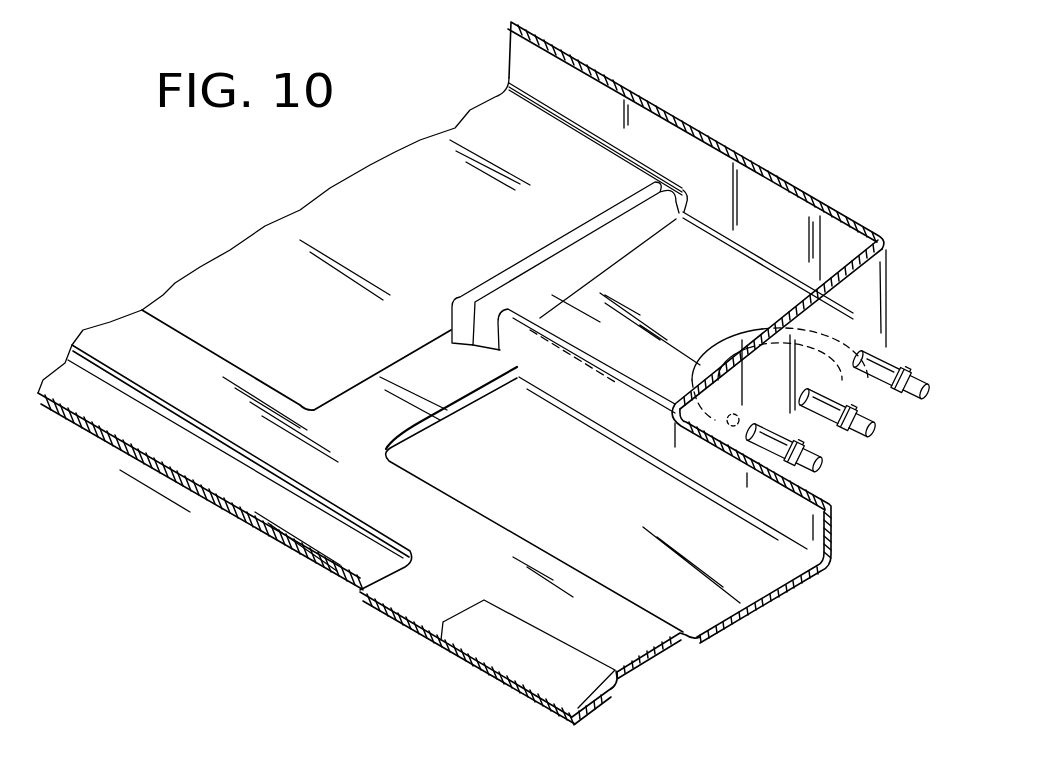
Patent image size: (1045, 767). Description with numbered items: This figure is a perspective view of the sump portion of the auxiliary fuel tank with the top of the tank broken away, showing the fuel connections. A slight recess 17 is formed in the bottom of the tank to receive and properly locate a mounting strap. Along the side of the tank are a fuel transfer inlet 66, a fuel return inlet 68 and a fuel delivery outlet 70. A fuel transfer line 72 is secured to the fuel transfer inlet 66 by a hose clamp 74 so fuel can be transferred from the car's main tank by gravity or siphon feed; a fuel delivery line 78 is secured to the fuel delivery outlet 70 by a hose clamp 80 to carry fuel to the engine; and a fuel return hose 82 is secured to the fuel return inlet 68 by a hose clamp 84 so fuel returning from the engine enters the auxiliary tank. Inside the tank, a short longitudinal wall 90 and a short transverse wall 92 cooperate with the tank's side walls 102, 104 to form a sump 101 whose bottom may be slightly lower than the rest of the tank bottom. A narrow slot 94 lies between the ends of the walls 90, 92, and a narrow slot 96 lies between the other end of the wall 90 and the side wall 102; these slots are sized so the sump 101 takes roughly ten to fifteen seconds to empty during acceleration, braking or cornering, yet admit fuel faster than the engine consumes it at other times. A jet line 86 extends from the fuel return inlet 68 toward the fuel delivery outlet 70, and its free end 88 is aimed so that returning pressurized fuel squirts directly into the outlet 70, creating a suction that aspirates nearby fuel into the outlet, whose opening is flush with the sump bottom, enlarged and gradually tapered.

The recess 17 is at (383, 600).
The fuel transfer inlet 66 is at (840, 378).
The fuel return inlet 68 is at (878, 356).
The fuel delivery outlet 70 is at (772, 433).
The fuel transfer line 72 is at (865, 430).
The hose clamp 74 is at (862, 413).
The fuel delivery line 78 is at (822, 468).
The hose clamp 80 is at (807, 448).
The fuel return hose 82 is at (917, 395).
The hose clamp 84 is at (910, 370).
The jet line 86 is at (738, 333).
The free end 88 is at (725, 450).
The longitudinal wall 90 is at (550, 282).
The transverse wall 92 is at (580, 387).
The slot 94 is at (493, 345).
The slot 96 is at (683, 200).
The sump 101 is at (675, 296).
The side wall 102 is at (748, 229).
The side wall 104 is at (753, 403).